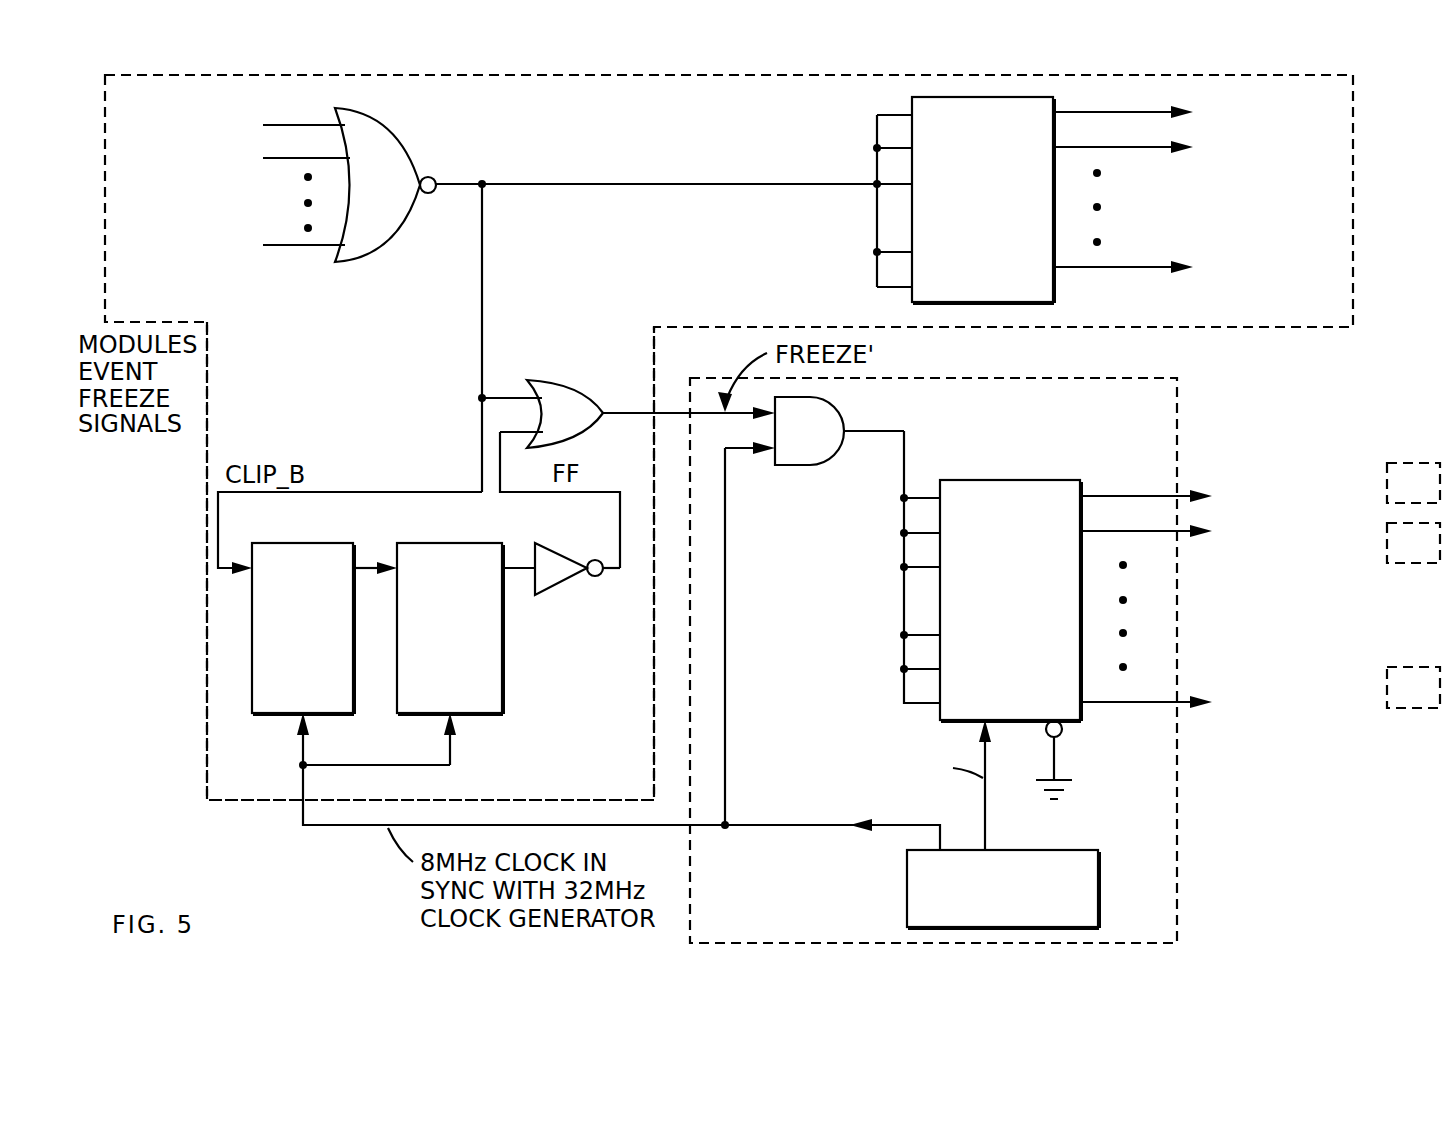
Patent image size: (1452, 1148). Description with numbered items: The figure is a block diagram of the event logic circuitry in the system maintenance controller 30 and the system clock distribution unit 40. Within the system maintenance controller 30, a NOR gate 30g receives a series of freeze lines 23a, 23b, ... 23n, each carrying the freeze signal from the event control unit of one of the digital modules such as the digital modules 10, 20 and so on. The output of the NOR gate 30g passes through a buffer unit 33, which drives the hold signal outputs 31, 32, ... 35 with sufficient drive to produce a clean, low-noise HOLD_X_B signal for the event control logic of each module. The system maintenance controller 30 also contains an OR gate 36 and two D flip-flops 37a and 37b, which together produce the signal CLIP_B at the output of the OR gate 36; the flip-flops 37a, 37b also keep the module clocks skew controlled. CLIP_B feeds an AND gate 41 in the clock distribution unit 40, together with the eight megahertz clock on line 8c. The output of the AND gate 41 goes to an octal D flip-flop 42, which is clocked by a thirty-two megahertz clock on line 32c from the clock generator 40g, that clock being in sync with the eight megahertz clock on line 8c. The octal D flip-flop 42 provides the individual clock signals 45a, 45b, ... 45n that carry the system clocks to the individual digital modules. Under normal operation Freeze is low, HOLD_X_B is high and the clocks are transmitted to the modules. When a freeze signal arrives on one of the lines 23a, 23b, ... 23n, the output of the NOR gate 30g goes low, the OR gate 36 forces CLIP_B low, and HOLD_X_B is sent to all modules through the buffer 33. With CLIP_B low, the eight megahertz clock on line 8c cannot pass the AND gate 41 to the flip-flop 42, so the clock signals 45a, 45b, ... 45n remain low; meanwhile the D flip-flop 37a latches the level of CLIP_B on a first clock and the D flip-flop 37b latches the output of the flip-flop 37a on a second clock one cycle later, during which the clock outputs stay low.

The freeze signal line 23a is at (305, 125).
The freeze signal line 23b is at (292, 158).
The freeze signal line 23n is at (302, 248).
The NOR gate 30g is at (405, 152).
The system maintenance controller 30 is at (207, 582).
The hold signal output 31 is at (1137, 112).
The hold signal output 32 is at (1130, 148).
The buffer unit 33 is at (990, 256).
The hold signal output 35 is at (1153, 268).
The OR gate 36 is at (573, 392).
The D flip-flop 37a is at (277, 715).
The D flip-flop 37b is at (497, 670).
The 8 MHz clock line 8c is at (360, 827).
The system clock distribution unit 40 is at (1178, 425).
The AND gate 41 is at (808, 467).
The octal D flip-flop 42 is at (1017, 659).
The clock signal 45a is at (1167, 495).
The clock signal 45b is at (1170, 530).
The clock signal 45n is at (1170, 705).
The 32 MHz clock line 32c is at (985, 824).
The clock generator 40g is at (1098, 857).
The digital module 10 is at (1413, 483).
The digital module 20 is at (1413, 544).